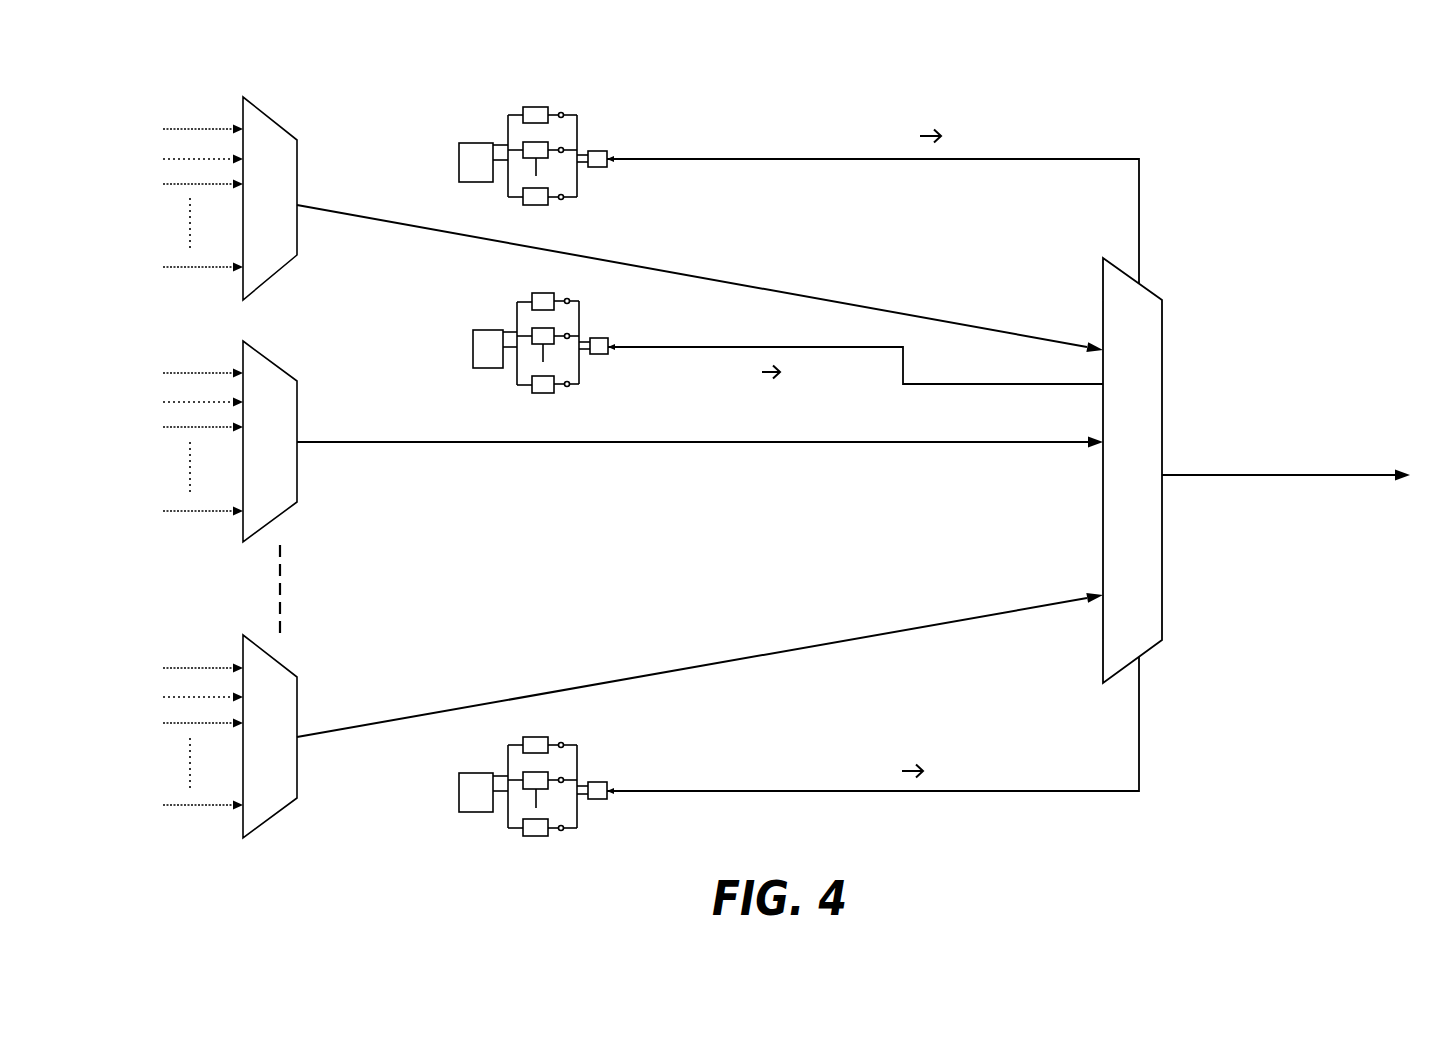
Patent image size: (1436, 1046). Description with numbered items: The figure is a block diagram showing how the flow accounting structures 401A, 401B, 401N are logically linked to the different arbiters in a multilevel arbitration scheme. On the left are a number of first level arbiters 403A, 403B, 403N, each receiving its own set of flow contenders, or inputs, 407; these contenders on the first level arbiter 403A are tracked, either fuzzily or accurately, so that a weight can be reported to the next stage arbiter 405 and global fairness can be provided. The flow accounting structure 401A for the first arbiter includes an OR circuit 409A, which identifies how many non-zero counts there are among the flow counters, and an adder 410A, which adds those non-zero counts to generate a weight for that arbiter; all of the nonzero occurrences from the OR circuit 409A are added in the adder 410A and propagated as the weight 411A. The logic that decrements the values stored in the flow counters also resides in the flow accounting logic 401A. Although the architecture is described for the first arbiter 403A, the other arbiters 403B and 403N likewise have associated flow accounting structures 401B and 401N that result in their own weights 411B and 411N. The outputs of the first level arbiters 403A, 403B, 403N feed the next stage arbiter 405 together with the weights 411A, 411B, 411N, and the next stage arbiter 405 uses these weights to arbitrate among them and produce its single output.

The flow accounting structure 401A is at (554, 106).
The flow accounting structure 401B is at (482, 383).
The flow accounting structure 401N is at (493, 838).
The first level arbiter 403A is at (270, 118).
The first level arbiter 403B is at (268, 362).
The first level arbiter 403N is at (272, 658).
The next stage arbiter 405 is at (1155, 295).
The flow contenders 407 is at (193, 124).
The OR circuit 409A is at (560, 113).
The adder 410A is at (605, 150).
The weight 411A is at (890, 118).
The weight 411B is at (745, 392).
The weight 411N is at (877, 745).